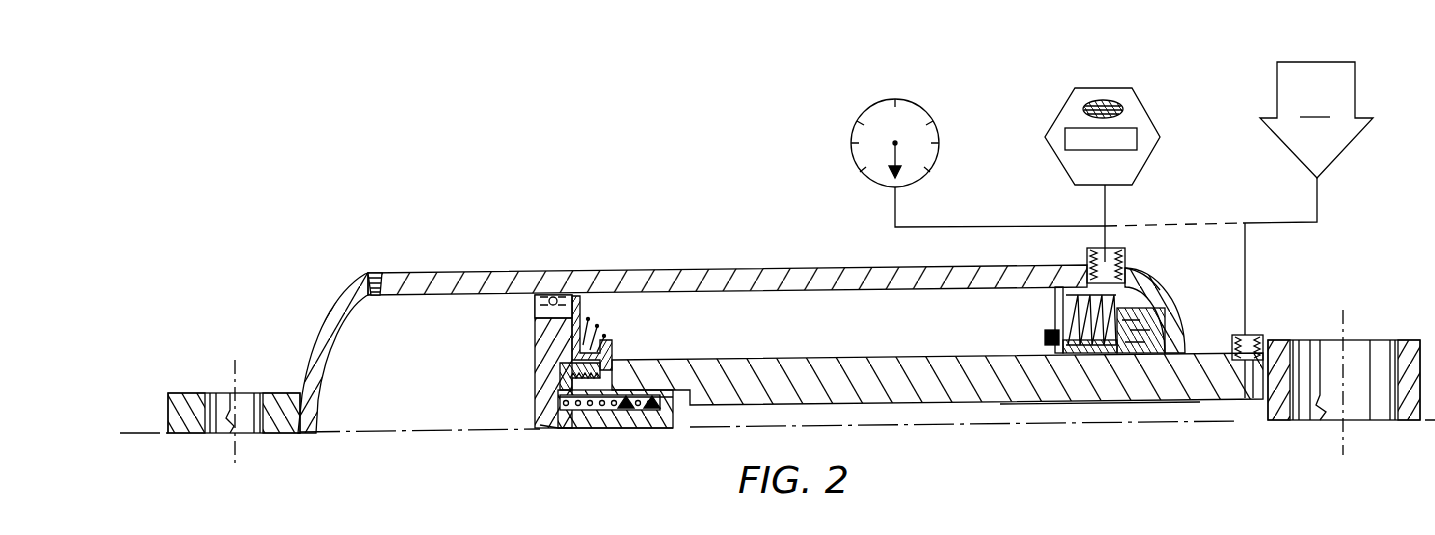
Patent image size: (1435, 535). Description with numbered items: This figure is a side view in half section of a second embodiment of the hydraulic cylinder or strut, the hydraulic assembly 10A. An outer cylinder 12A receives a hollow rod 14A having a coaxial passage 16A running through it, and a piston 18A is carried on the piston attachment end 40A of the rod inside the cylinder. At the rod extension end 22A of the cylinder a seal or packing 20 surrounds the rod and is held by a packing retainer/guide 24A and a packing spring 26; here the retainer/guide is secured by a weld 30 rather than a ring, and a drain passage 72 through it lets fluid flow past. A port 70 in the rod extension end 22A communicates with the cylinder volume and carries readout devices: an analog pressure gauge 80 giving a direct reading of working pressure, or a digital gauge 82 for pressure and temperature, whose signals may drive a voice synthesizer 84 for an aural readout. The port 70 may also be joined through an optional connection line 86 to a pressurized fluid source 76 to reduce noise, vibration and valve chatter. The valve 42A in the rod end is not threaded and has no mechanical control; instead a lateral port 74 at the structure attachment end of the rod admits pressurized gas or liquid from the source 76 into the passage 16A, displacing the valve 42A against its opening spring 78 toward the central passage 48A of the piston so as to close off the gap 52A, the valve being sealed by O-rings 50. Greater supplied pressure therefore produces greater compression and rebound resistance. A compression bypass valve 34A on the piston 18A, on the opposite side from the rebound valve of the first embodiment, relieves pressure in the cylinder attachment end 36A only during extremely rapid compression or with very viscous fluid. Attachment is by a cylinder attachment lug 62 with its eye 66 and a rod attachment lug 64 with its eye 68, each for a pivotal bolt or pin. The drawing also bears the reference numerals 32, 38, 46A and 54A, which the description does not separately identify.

The hydraulic assembly 10A is at (1023, 452).
The cylinder 12A is at (742, 268).
The hollow rod 14A is at (910, 357).
The coaxial passage 16A is at (1095, 407).
The piston 18A is at (525, 328).
The seal or packing 20 is at (1182, 340).
The rod extension end 22A is at (1179, 309).
The packing retainer/guide 24A is at (1080, 300).
The packing spring 26 is at (1150, 282).
The weld 30 is at (1055, 305).
The pin 32 is at (554, 296).
The compression bypass valve 34A is at (578, 318).
The cylinder attachment end 36A is at (368, 273).
The bore 38 is at (535, 316).
The piston attachment end 40A is at (524, 372).
The valve 42A is at (589, 393).
The lower surface 46A is at (572, 432).
The central passage 48A is at (542, 426).
The O-rings 50 is at (640, 400).
The gap 52A is at (556, 420).
The serrations 54A is at (560, 375).
The cylinder attachment lug 62 is at (243, 409).
The rod attachment lug 64 is at (1344, 370).
The eye or passage 66 is at (280, 436).
The eye or passage 68 is at (1380, 418).
The port 70 is at (1128, 266).
The drain passage 72 is at (1056, 320).
The lateral port 74 is at (1262, 336).
The pressurized fluid source 76 is at (1308, 142).
The opening spring 78 is at (620, 402).
The analog pressure gauge 80 is at (851, 138).
The digital gauge 82 is at (1094, 132).
The voice synthesizer 84 is at (1122, 107).
The optional connection line 86 is at (1180, 223).